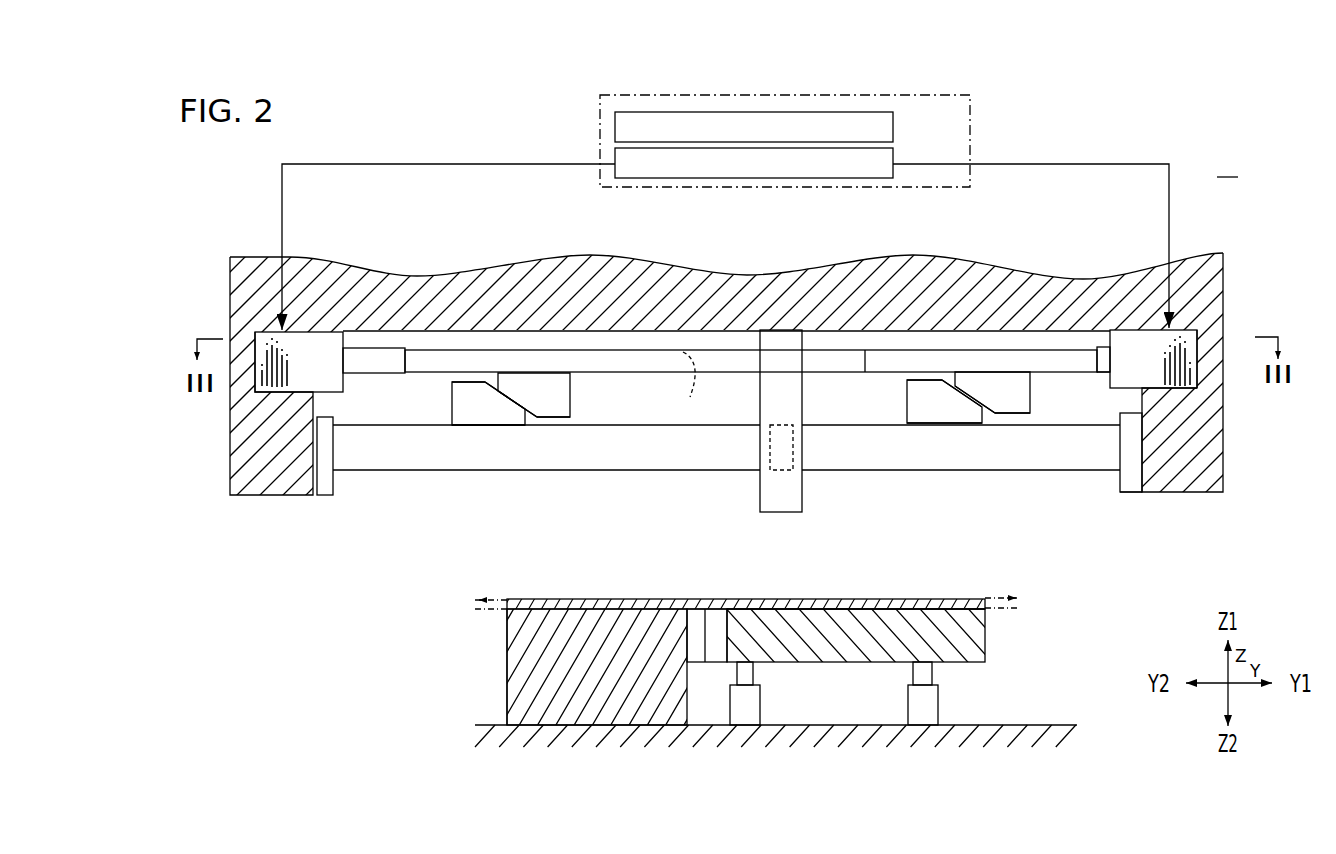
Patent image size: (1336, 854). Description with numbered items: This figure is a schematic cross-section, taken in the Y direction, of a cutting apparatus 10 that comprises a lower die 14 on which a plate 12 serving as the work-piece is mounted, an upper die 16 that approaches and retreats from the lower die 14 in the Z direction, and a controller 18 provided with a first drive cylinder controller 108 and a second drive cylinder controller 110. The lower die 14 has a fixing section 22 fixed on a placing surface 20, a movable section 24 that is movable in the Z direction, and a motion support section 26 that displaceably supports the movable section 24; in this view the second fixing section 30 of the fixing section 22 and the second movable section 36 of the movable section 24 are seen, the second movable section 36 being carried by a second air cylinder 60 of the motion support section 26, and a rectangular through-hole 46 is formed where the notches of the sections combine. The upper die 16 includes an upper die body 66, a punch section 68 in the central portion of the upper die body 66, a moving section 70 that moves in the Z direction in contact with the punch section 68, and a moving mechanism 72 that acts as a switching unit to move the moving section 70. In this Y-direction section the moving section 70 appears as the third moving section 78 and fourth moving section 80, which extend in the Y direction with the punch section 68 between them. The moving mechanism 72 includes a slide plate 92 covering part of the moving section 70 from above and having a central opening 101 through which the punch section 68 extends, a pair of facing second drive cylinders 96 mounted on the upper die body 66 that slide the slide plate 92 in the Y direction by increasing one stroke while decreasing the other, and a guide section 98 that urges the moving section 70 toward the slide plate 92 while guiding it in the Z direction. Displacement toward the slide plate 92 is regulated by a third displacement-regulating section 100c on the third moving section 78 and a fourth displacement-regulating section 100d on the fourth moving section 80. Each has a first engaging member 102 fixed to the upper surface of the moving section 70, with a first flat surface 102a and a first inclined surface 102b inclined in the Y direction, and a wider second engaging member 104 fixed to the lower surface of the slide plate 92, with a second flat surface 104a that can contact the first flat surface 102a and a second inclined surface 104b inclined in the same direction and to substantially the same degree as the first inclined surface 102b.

The cutting apparatus 10 is at (1227, 165).
The plate 12 is at (530, 606).
The lower die 14 is at (759, 671).
The upper die 16 is at (1230, 246).
The controller 18 is at (972, 150).
The placing surface 20 is at (776, 730).
The fixing section 22 is at (585, 687).
The movable section 24 is at (990, 645).
The motion support section 26 is at (849, 740).
The second fixing section 30 is at (535, 650).
The second movable section 36 is at (965, 632).
The rectangular through-hole 46 is at (697, 622).
The second air cylinder 60 is at (757, 708).
The upper die body 66 is at (1207, 447).
The punch section 68 is at (775, 408).
The moving section 70 is at (1067, 521).
The moving mechanism 72 is at (1197, 323).
The third moving section 78 is at (632, 452).
The fourth moving section 80 is at (1094, 442).
The slide plate 92 is at (1047, 360).
The second drive cylinder 96 is at (265, 367).
The guide section 98 is at (321, 494).
The third displacement-regulating section 100c is at (436, 447).
The fourth displacement-regulating section 100d is at (892, 447).
The opening 101 is at (698, 386).
The first engaging member 102 is at (472, 412).
The first flat surface 102a is at (460, 374).
The first inclined surface 102b is at (510, 405).
The second engaging member 104 is at (548, 390).
The second flat surface 104a is at (547, 418).
The second inclined surface 104b is at (516, 407).
The first drive cylinder controller 108 is at (893, 116).
The second drive cylinder controller 110 is at (893, 151).